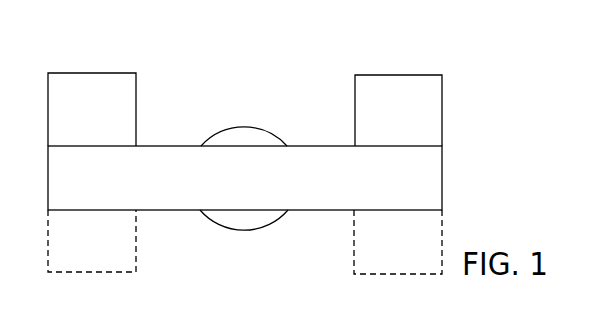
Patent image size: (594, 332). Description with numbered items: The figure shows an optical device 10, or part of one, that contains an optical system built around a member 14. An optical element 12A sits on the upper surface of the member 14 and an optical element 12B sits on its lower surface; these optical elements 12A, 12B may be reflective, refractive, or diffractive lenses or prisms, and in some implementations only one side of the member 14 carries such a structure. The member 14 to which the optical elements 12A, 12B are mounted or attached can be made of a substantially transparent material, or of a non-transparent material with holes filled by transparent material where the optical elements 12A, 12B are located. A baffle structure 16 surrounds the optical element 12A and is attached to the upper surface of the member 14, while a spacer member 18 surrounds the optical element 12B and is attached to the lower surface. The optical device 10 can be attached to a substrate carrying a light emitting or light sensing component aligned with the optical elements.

The optical device 10 is at (468, 102).
The optical element 12A is at (242, 127).
The optical element 12B is at (246, 230).
The member 14 is at (442, 183).
The baffle structure 16 is at (103, 73).
The spacer member 18 is at (77, 272).